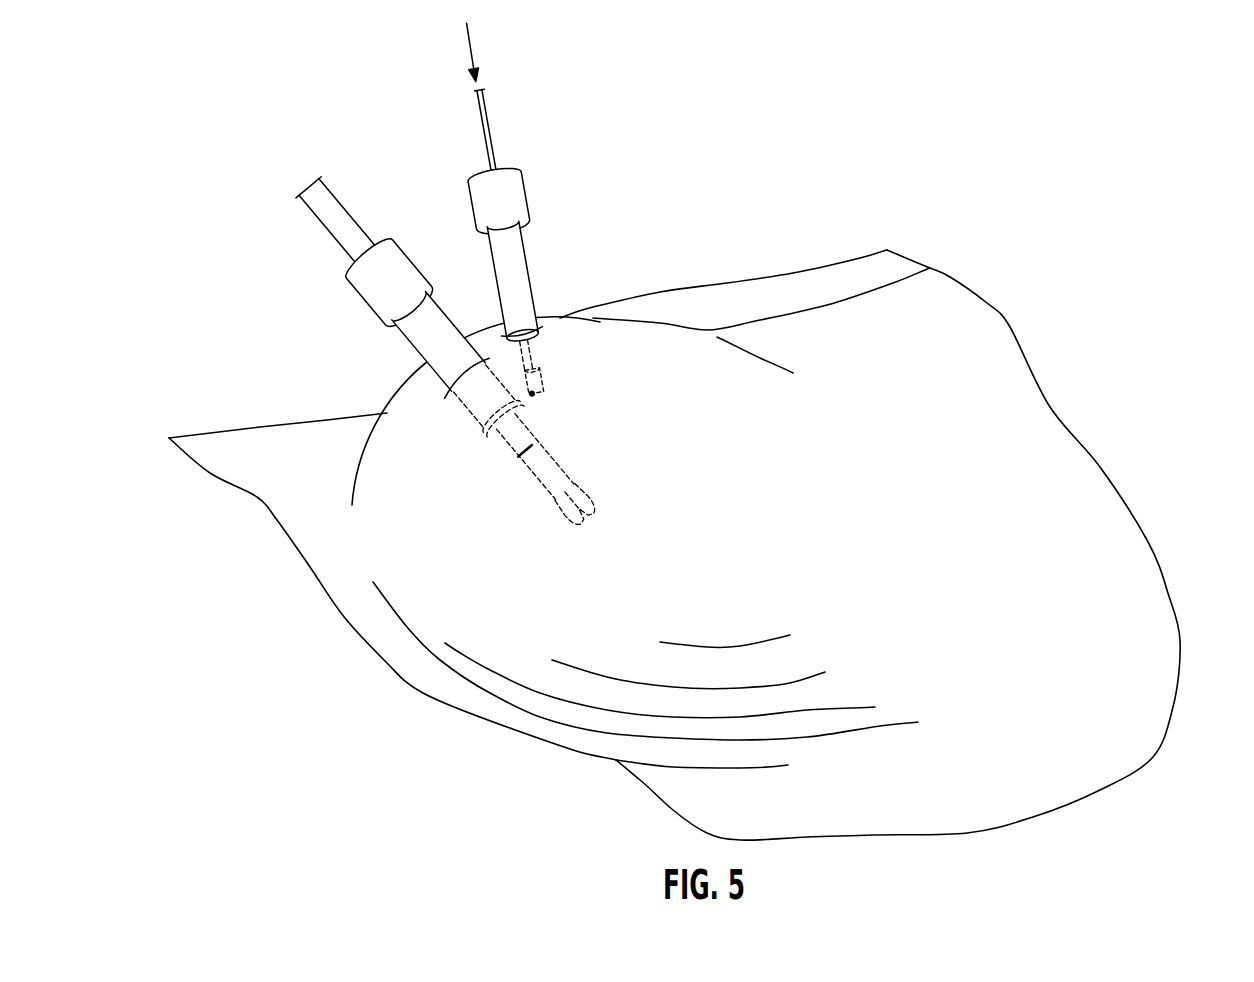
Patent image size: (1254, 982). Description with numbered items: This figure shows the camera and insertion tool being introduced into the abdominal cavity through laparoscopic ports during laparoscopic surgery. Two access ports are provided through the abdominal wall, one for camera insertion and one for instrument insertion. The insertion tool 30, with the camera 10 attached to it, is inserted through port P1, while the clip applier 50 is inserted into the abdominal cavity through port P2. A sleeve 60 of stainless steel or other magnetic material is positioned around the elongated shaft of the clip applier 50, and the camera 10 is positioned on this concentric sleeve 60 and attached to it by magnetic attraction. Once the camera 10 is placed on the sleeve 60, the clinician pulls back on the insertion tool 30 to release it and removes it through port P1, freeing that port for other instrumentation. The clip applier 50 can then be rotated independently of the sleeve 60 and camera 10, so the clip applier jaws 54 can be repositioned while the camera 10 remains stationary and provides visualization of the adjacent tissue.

The camera 10 is at (543, 383).
The insertion tool 30 is at (533, 363).
The clip applier 50 is at (548, 470).
The clip applier jaws 54 is at (588, 503).
The sleeve 60 is at (508, 443).
The access port P1 is at (521, 279).
The access port P2 is at (417, 338).